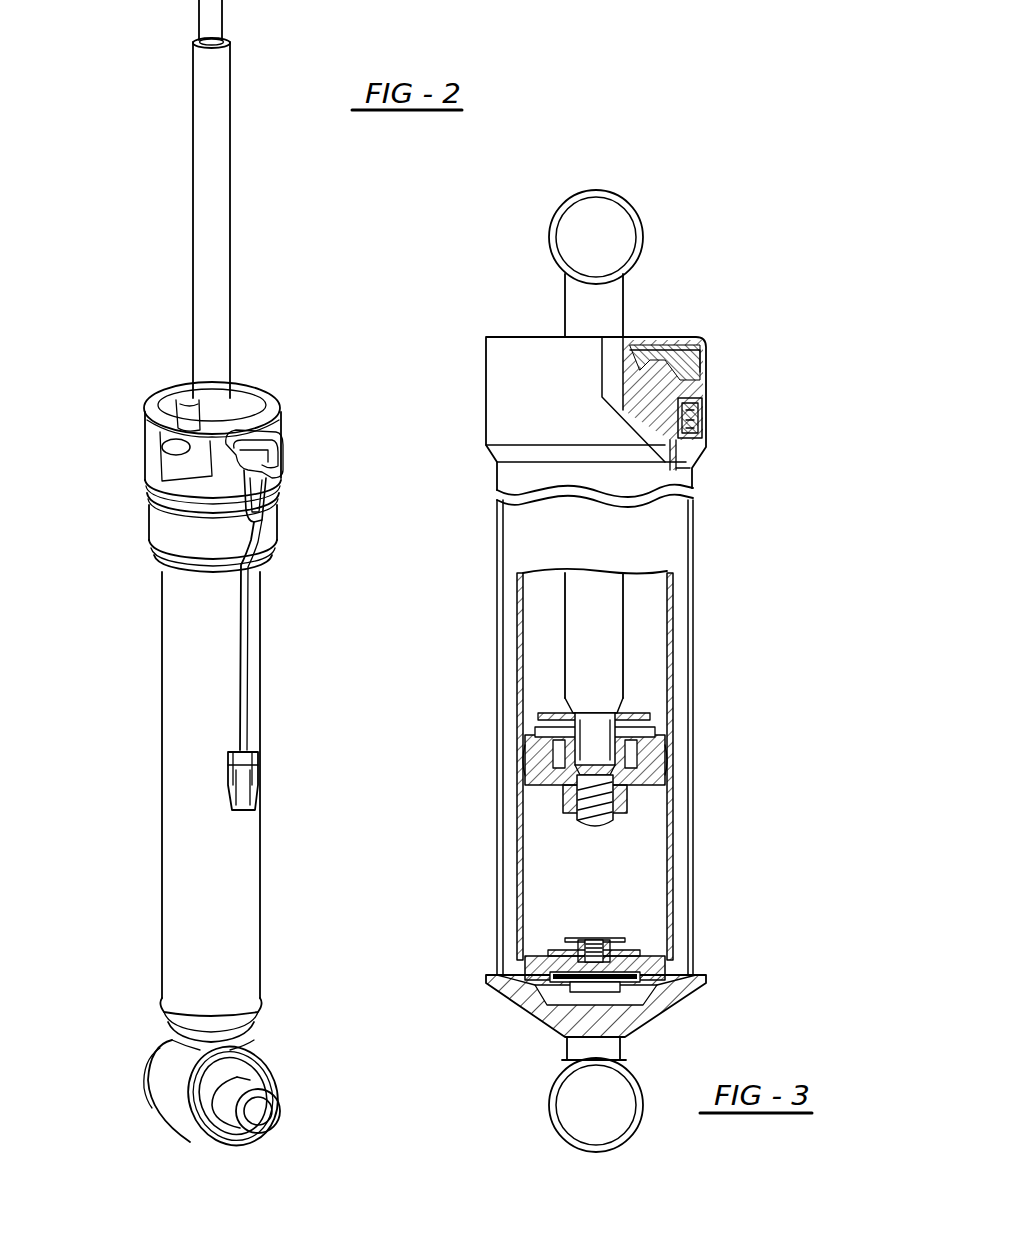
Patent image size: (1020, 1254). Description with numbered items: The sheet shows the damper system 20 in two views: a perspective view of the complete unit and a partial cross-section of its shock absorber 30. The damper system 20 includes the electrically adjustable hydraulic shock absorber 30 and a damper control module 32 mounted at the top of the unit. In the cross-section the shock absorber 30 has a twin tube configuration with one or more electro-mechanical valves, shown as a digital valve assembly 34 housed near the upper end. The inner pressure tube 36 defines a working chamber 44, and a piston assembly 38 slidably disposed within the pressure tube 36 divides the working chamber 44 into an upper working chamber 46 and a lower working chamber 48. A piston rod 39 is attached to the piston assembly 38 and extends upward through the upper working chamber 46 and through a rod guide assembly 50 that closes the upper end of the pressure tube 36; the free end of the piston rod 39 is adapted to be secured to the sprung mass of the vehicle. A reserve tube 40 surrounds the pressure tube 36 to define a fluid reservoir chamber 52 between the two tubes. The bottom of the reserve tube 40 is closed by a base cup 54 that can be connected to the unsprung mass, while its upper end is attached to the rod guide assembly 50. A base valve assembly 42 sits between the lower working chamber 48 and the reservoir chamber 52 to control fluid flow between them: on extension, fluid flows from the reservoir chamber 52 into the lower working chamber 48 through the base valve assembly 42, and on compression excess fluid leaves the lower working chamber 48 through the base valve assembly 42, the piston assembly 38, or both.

In FIG. 2, the damper system 20 is at (104, 178).
In FIG. 2, the shock absorber 30 is at (162, 745).
In FIG. 3, the shock absorber 30 is at (699, 279).
In FIG. 2, the damper control module 32 is at (147, 452).
In FIG. 3, the digital valve assembly 34 is at (705, 402).
In FIG. 3, the pressure tube 36 is at (673, 593).
In FIG. 3, the piston assembly 38 is at (660, 750).
In FIG. 3, the piston rod 39 is at (610, 634).
In FIG. 3, the reserve tube 40 is at (693, 812).
In FIG. 3, the base valve assembly 42 is at (667, 960).
In FIG. 3, the working chamber 44 is at (603, 886).
In FIG. 3, the upper working chamber 46 is at (640, 650).
In FIG. 3, the lower working chamber 48 is at (545, 840).
In FIG. 3, the rod guide assembly 50 is at (690, 352).
In FIG. 3, the fluid reservoir chamber 52 is at (510, 615).
In FIG. 3, the base cup 54 is at (525, 1008).